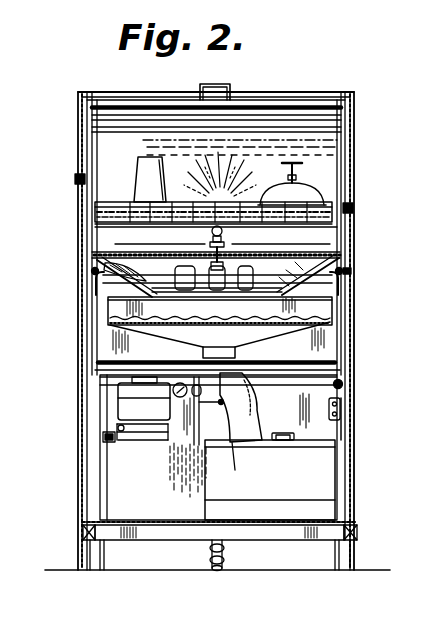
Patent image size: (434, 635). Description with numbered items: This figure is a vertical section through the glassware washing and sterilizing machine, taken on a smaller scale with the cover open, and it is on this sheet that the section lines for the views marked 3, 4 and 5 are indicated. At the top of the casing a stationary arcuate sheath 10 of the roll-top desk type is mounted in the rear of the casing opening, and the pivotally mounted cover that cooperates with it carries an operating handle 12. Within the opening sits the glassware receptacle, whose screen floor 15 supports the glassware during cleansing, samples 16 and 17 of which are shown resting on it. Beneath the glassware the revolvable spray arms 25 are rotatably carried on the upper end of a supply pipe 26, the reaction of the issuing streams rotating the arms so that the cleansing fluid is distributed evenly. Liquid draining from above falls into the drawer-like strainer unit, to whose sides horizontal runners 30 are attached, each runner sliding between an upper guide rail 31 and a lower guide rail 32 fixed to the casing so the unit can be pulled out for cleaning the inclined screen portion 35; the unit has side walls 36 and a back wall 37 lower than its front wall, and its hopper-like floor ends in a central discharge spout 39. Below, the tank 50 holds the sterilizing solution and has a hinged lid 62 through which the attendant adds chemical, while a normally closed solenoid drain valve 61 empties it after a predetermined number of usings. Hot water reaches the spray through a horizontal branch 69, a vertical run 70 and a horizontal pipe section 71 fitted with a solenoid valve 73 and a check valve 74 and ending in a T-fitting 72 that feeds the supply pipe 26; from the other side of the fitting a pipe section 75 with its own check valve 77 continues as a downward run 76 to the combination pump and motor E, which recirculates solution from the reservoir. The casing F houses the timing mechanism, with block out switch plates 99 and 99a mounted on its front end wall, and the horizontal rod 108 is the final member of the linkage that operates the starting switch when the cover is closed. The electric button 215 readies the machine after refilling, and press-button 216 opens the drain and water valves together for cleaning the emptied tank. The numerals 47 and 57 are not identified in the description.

The section line 3- 3 is at (72, 88).
The section line 4- 4 is at (71, 298).
The section line 5- 5 is at (72, 374).
The stationary arcuate sheath 10 is at (354, 157).
The operating handle 12 is at (229, 86).
The screen floor 15 is at (178, 200).
The glassware sample 16 is at (295, 178).
The glassware sample 17 is at (136, 174).
The revolvable spray arms 25 is at (216, 224).
The supply pipe 26 is at (200, 248).
The horizontal runners 30 is at (217, 285).
The upper guide rail 31 is at (106, 300).
The lower guide rail 32 is at (106, 318).
The screen portion 35 is at (158, 318).
The side walls 36 is at (262, 290).
The back wall 37 is at (160, 312).
The central discharge spout 39 is at (235, 351).
The spray gun 47 is at (249, 450).
The tank 50 is at (305, 500).
The gauge post 57 is at (203, 411).
The drain valve 61 is at (226, 548).
The hinged lid 62 is at (314, 449).
The horizontal branch 69 is at (282, 390).
The vertical run 70 is at (358, 381).
The horizontal pipe section 71 is at (335, 260).
The T-fitting 72 is at (238, 290).
The solenoid operated valve 73 is at (302, 253).
The check valve 74 is at (262, 257).
The horizontal pipe section 75 is at (98, 263).
The downward run 76 is at (100, 396).
The check valve 77 is at (178, 266).
The block out switch plate 99 is at (143, 408).
The block out switch plate 99a is at (172, 448).
The horizontal rod 108 is at (104, 438).
The electric button 215 is at (337, 407).
The press-button 216 is at (352, 427).
The combination pump and motor E is at (118, 405).
The casing F is at (190, 442).